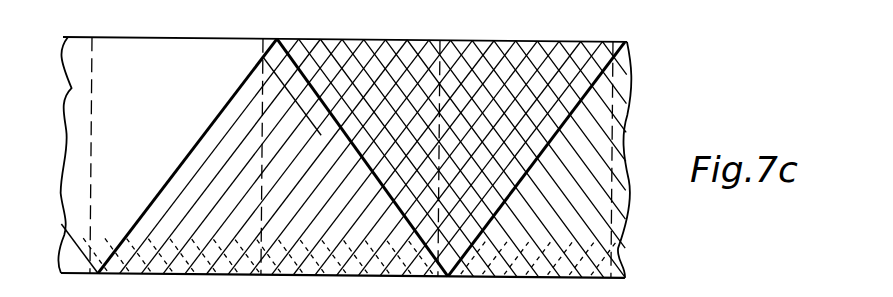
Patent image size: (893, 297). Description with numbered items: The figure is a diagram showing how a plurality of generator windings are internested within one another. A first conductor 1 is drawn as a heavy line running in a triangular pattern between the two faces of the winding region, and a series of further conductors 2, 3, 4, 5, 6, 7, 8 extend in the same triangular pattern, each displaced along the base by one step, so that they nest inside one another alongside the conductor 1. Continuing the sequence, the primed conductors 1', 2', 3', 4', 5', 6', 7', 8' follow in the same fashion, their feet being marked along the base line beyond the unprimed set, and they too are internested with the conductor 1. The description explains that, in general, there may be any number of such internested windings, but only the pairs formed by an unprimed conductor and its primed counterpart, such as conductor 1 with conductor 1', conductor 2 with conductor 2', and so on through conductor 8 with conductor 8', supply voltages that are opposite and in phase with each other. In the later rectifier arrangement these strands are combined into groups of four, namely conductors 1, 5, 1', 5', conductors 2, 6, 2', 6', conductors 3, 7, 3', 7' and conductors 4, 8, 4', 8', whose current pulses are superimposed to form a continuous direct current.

The conductor 1 is at (183, 166).
The conductor 2 is at (205, 166).
The conductor 3 is at (227, 167).
The conductor 4 is at (248, 167).
The conductor 5 is at (270, 167).
The conductor 6 is at (292, 167).
The conductor 7 is at (313, 167).
The conductor 8 is at (335, 168).
The conductor 1' is at (356, 168).
The conductor 2' is at (378, 168).
The conductor 3' is at (399, 168).
The conductor 4' is at (421, 168).
The conductor 5' is at (443, 168).
The conductor 6' is at (464, 168).
The conductor 7' is at (486, 168).
The conductor 8' is at (508, 168).